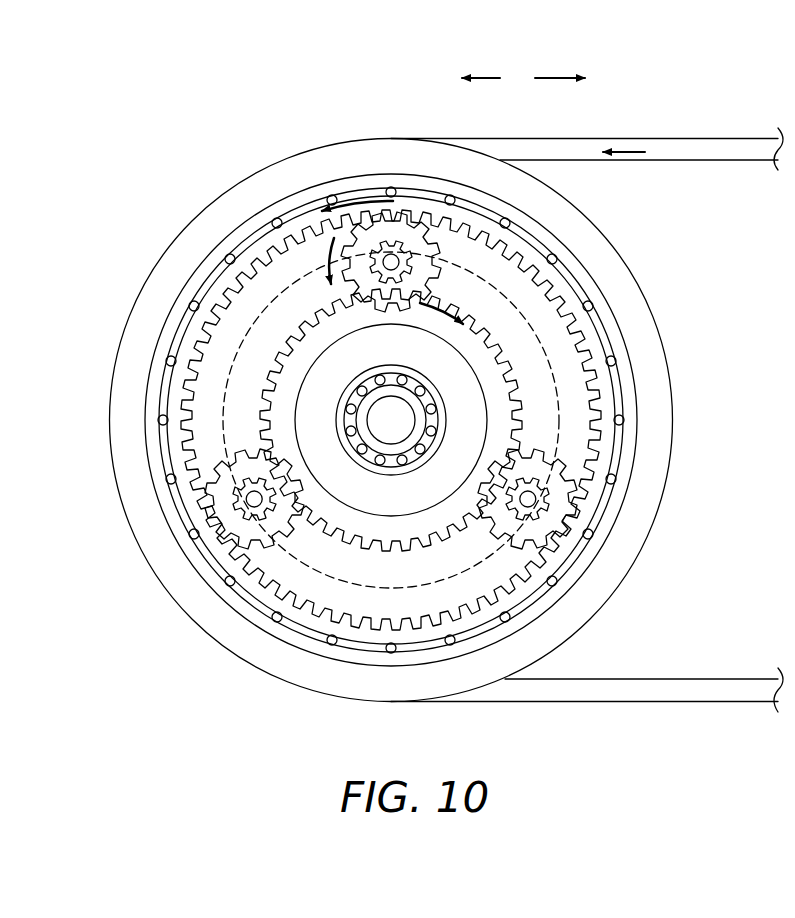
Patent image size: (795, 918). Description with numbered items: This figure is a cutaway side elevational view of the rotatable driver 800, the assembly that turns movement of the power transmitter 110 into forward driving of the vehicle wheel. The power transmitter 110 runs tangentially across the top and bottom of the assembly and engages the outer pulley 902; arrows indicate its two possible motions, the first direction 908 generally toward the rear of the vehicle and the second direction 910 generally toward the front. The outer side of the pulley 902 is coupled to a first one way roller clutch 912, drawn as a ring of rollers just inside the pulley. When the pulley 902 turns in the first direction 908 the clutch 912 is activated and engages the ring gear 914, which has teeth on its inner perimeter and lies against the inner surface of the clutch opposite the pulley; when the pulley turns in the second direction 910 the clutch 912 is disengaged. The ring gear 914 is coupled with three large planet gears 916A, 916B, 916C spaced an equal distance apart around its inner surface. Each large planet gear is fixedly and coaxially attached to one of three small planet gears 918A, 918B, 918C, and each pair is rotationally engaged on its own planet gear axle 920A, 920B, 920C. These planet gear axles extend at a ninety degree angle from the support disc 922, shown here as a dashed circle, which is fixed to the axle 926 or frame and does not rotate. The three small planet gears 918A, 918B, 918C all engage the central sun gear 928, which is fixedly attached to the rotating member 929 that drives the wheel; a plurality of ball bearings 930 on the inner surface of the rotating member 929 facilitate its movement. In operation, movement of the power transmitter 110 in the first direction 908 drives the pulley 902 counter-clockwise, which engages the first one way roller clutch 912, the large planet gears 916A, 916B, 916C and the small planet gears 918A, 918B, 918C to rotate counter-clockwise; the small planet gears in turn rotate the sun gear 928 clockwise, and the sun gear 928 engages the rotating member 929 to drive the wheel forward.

The rotatable driver 800 is at (170, 72).
The first direction 908 is at (475, 55).
The second direction 910 is at (561, 55).
The power transmitter 110 is at (692, 137).
The pulley 902 is at (306, 150).
The first one way roller clutch 912 is at (378, 188).
The ring gear 914 is at (601, 377).
The support disc 922 is at (313, 573).
The axle 926 is at (387, 416).
The rotating member 929 is at (445, 372).
The sun gear 928 is at (530, 422).
The ball bearings 930 is at (398, 458).
The large planet gear 916A is at (440, 258).
The small planet gear 918A is at (413, 267).
The planet gear axle 920A is at (394, 265).
The large planet gear 916B is at (582, 462).
The small planet gear 918B is at (527, 521).
The planet gear axle 920B is at (530, 502).
The large planet gear 916C is at (227, 457).
The small planet gear 918C is at (258, 520).
The planet gear axle 920C is at (256, 502).